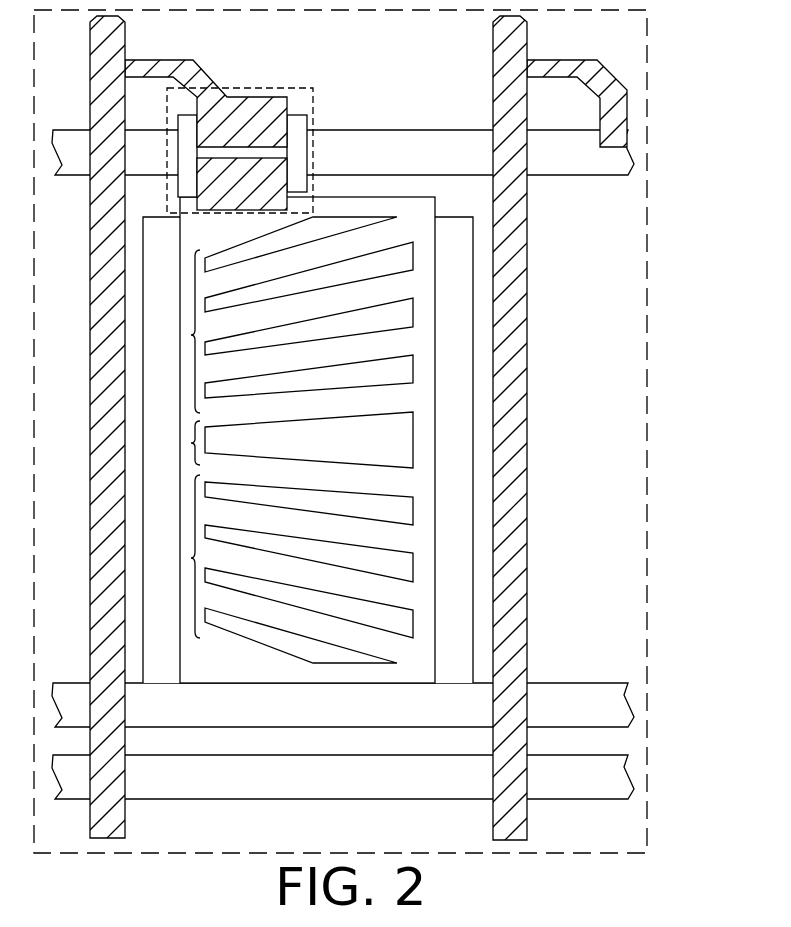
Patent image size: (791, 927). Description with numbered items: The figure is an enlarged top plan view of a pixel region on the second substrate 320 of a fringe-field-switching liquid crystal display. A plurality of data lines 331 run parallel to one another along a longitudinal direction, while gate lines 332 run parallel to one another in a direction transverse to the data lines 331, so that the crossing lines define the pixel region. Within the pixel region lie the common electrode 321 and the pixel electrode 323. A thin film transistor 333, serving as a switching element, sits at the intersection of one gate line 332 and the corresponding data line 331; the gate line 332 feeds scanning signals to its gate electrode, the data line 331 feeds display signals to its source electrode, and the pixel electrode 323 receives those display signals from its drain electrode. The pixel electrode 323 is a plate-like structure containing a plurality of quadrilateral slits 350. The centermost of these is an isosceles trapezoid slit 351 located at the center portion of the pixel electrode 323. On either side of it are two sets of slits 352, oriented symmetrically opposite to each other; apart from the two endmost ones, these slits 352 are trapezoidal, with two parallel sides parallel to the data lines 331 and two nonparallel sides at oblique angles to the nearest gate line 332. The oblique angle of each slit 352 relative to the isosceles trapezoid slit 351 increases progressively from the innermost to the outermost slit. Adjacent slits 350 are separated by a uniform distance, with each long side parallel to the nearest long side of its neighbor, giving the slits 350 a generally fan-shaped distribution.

The second substrate 320 is at (627, 43).
The common electrode 321 is at (453, 322).
The pixel electrode 323 is at (415, 286).
The data line 331 is at (512, 242).
The gate line 332 is at (607, 163).
The thin film transistor 333 is at (283, 88).
The slits 350 is at (491, 440).
The isosceles trapezoid slit 351 is at (393, 437).
The slits of two sets 352 is at (393, 370).